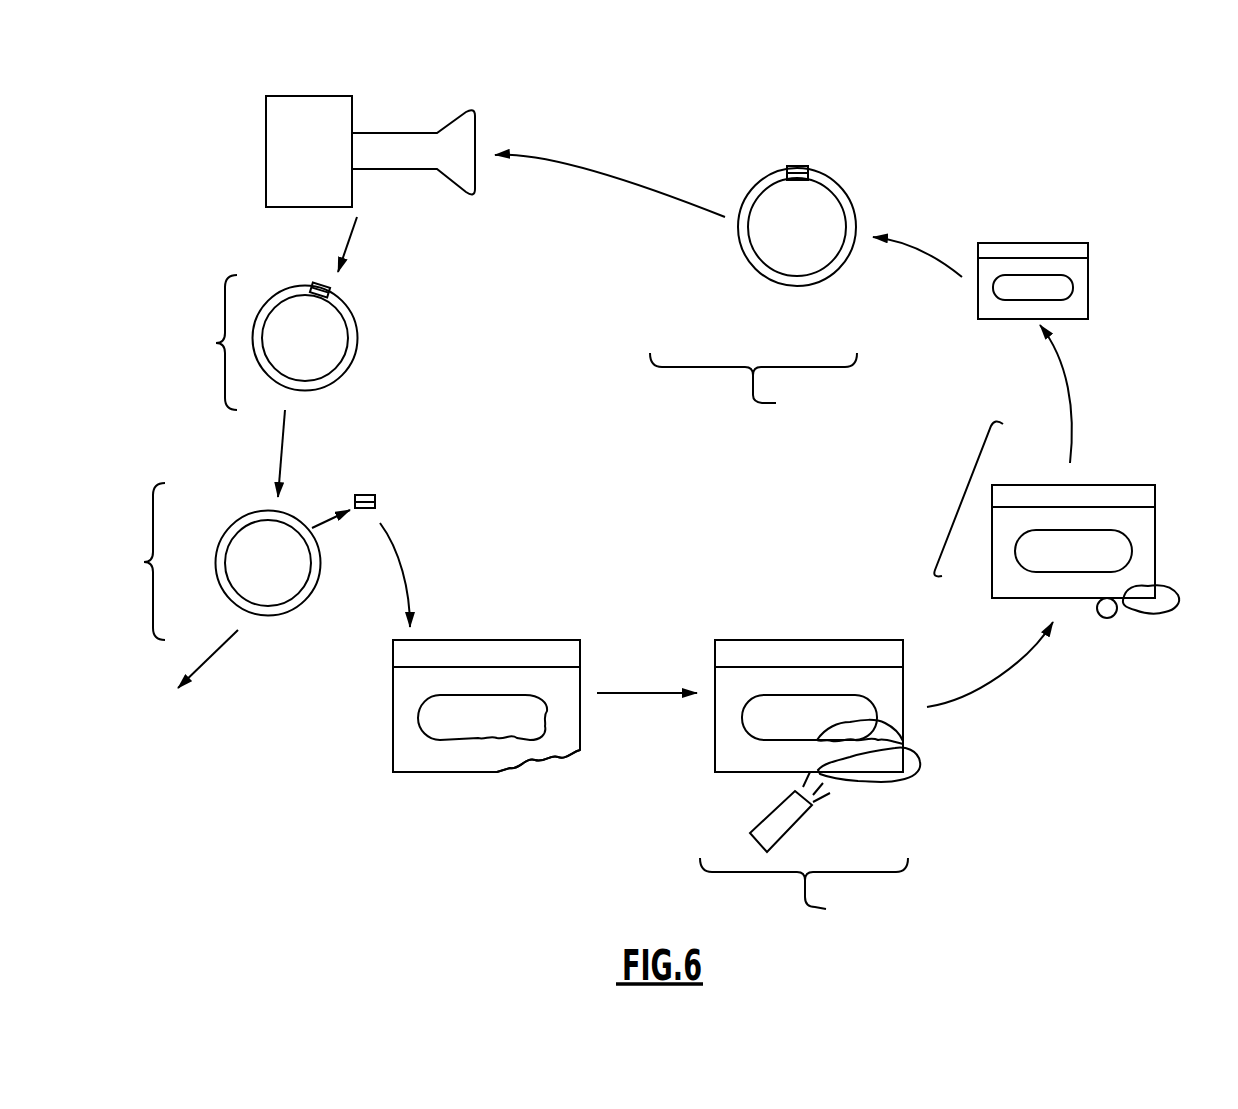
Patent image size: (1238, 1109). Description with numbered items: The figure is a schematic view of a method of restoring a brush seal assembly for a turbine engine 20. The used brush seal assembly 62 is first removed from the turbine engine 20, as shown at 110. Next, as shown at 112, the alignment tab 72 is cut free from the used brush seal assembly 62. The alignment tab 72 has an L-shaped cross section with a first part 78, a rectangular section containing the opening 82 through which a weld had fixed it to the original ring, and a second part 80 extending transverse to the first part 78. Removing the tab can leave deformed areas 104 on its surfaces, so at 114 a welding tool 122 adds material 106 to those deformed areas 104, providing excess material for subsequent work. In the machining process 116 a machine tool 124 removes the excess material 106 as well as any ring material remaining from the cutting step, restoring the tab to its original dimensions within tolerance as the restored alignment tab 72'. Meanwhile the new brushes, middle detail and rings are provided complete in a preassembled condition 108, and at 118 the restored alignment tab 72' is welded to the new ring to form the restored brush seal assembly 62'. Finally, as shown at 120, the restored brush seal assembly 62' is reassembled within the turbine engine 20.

The turbine engine 20 is at (403, 118).
The used brush seal assembly 62 is at (309, 459).
The restored brush seal assembly 62' is at (748, 246).
The alignment tab 72 is at (785, 584).
The restored alignment tab 72' is at (990, 217).
The first part 78 is at (403, 708).
The second part 80 is at (403, 655).
The opening 82 is at (418, 731).
The deformed areas 104 is at (515, 731).
The material 106 is at (868, 730).
The preassembled condition 108 is at (787, 278).
The removing step 110 is at (216, 343).
The alignment tab removal step 112 is at (144, 562).
The material addition step 114 is at (804, 892).
The machining process 116 is at (960, 495).
The attaching step 118 is at (753, 386).
The reassembling step 120 is at (583, 168).
The welding tool 122 is at (787, 820).
The machine tool 124 is at (1107, 619).